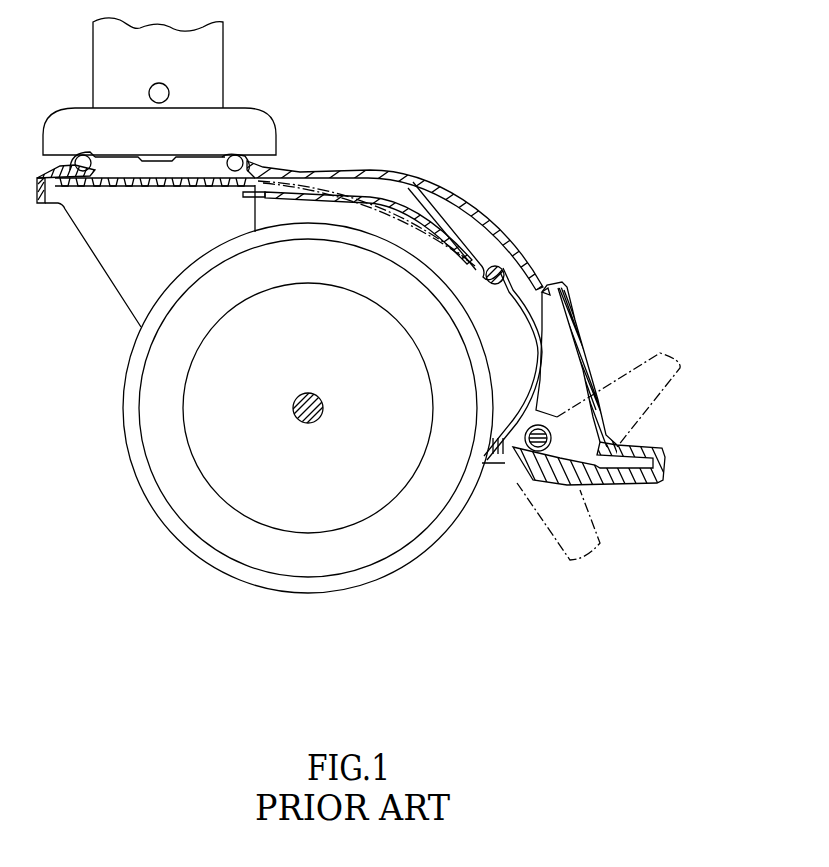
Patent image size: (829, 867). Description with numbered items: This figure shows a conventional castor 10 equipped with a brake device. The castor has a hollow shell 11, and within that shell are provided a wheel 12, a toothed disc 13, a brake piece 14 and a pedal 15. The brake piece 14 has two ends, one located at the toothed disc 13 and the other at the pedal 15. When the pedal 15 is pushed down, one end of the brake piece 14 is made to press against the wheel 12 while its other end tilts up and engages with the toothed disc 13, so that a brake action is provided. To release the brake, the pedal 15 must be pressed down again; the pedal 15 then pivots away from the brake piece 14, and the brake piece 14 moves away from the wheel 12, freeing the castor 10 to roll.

The castor 10 is at (324, 104).
The hollow shell 11 is at (100, 247).
The wheel 12 is at (188, 503).
The toothed disc 13 is at (263, 167).
The brake piece 14 is at (493, 266).
The pedal 15 is at (577, 313).